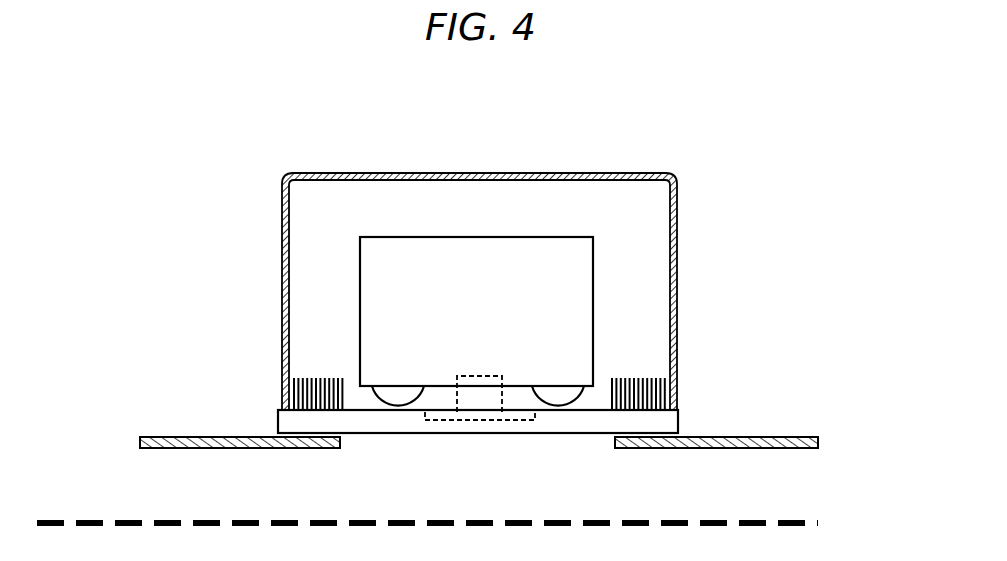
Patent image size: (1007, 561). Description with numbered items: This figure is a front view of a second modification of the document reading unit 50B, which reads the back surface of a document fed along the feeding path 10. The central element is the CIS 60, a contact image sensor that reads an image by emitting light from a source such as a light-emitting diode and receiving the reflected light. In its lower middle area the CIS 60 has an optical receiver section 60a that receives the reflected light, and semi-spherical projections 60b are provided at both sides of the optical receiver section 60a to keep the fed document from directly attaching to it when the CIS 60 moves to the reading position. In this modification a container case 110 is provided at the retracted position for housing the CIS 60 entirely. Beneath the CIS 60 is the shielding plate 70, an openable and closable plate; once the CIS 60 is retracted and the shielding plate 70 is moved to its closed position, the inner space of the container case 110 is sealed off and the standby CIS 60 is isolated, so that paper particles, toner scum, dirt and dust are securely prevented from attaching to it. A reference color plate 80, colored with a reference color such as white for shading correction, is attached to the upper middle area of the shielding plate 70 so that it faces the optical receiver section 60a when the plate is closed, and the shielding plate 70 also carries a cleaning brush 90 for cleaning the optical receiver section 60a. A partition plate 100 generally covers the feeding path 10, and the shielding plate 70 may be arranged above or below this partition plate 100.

The document reading unit 50B is at (716, 140).
The container case 110 is at (677, 268).
The CIS 60 is at (593, 266).
The optical receiver section 60a is at (496, 413).
The semi-spherical projections 60b is at (398, 403).
The shielding plate 70 is at (680, 418).
The reference color plate 80 is at (452, 424).
The cleaning brush 90 is at (315, 380).
The partition plate 100 is at (247, 450).
The feeding path 10 is at (608, 516).